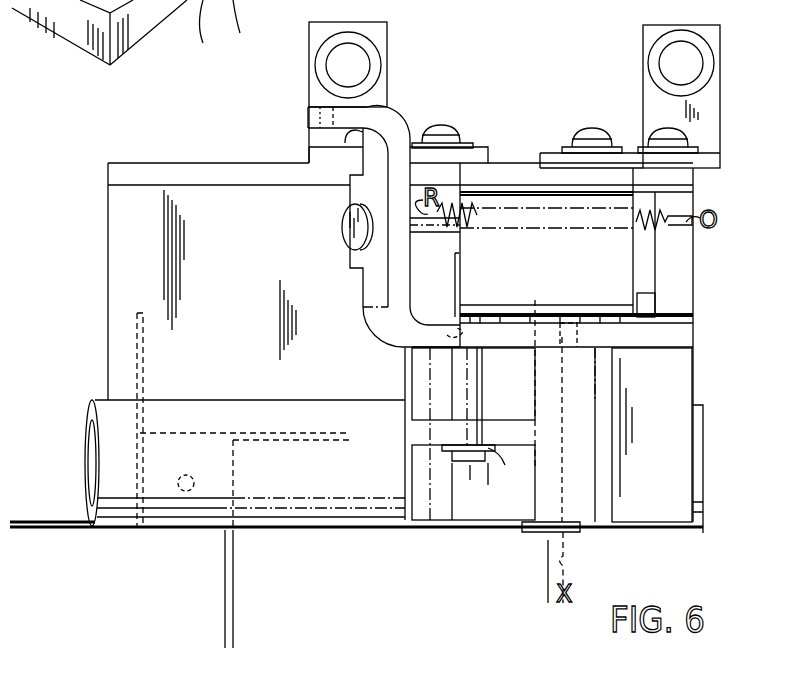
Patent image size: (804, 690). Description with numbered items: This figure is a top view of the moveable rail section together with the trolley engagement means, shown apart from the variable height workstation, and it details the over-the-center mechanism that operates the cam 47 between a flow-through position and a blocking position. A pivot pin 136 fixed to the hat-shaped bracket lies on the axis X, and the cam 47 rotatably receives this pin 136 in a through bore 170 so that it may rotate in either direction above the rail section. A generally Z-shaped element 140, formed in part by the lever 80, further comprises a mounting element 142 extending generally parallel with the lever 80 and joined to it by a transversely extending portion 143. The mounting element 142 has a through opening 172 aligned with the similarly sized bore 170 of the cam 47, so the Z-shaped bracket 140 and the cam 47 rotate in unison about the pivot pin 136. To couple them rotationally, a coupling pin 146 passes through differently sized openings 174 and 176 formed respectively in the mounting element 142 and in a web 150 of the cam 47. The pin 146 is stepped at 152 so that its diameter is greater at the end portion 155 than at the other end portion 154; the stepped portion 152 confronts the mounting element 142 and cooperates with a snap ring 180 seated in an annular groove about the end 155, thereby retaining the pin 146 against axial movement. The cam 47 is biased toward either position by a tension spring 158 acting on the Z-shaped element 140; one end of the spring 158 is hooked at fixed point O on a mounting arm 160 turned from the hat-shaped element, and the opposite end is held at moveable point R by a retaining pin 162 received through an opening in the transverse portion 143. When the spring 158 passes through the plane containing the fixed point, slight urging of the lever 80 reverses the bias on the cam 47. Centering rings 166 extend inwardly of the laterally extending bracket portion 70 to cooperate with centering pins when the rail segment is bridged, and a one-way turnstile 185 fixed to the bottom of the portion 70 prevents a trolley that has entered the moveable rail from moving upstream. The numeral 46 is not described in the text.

The solenoid coil assembly 46 is at (752, 229).
The cam 47 is at (701, 386).
The laterally extending portion of the bracket 70 is at (127, 244).
The lever 80 is at (308, 113).
The pivot pin 136 is at (552, 532).
The Z-shaped element 140 is at (383, 345).
The mounting element 142 is at (494, 327).
The transversely extending portion 143 is at (355, 260).
The rotational coupling pin 146 is at (470, 463).
The web 150 is at (500, 428).
The stepped portion 152 is at (487, 348).
The end portion 154 is at (455, 266).
The end portion 155 is at (455, 458).
The tension spring 158 is at (660, 215).
The mounting arm 160 is at (680, 294).
The retaining pin 162 is at (350, 240).
The centering rings 166 is at (418, 22).
The through bore 170 is at (560, 395).
The through opening 172 is at (560, 335).
The opening 174 is at (447, 335).
The opening 176 is at (450, 430).
The snap ring 180 is at (513, 470).
The one-way turnstile 185 is at (233, 580).